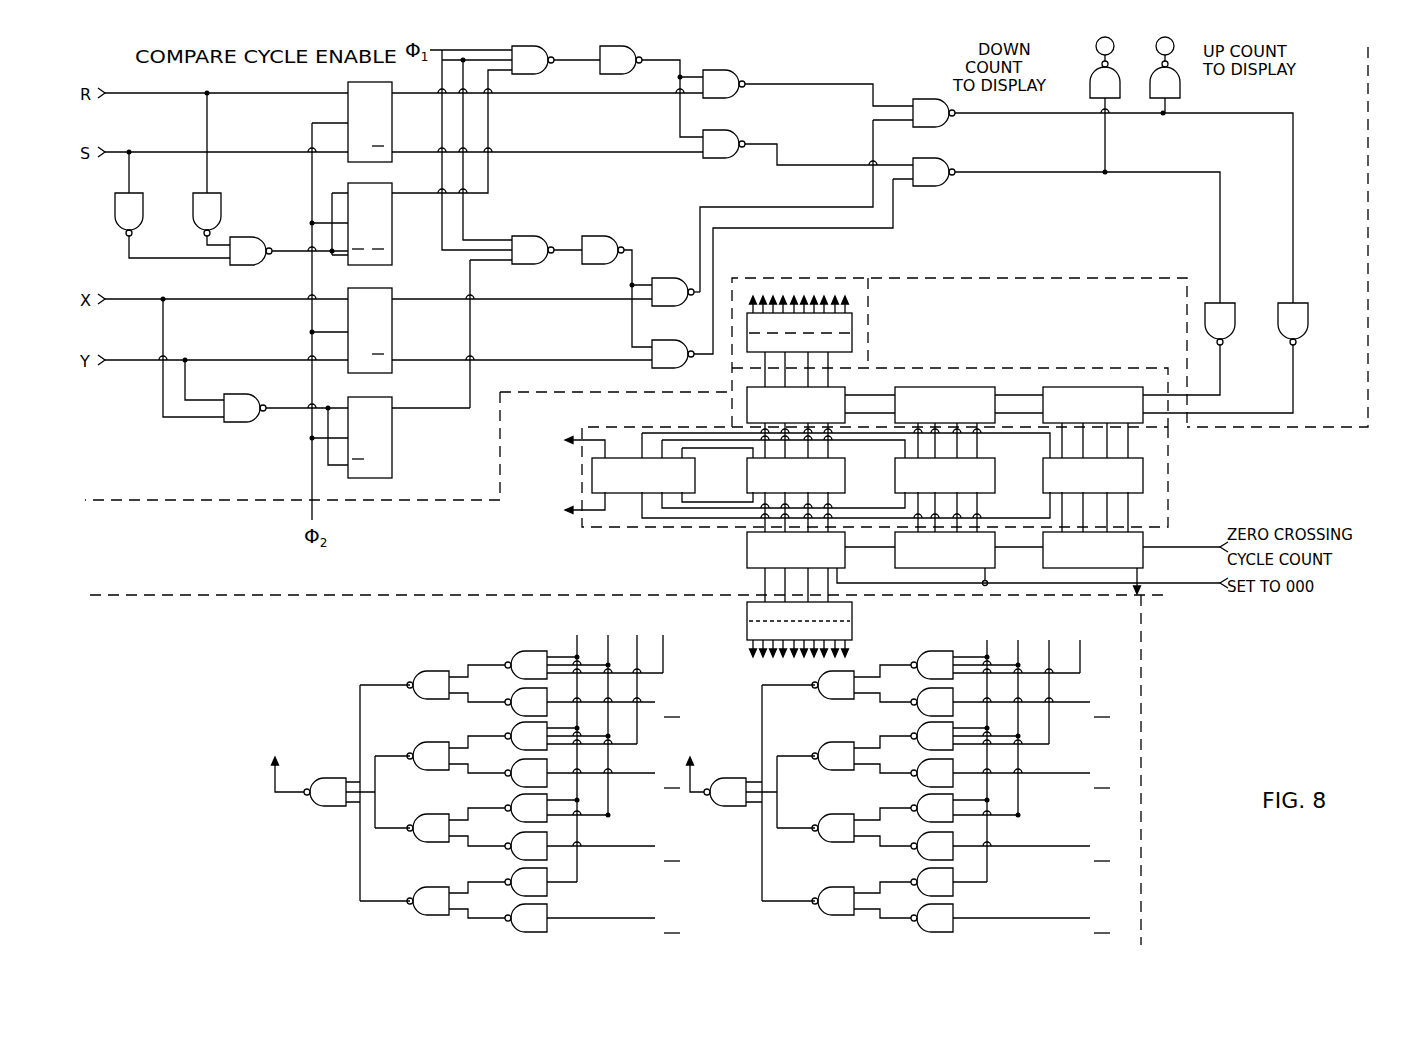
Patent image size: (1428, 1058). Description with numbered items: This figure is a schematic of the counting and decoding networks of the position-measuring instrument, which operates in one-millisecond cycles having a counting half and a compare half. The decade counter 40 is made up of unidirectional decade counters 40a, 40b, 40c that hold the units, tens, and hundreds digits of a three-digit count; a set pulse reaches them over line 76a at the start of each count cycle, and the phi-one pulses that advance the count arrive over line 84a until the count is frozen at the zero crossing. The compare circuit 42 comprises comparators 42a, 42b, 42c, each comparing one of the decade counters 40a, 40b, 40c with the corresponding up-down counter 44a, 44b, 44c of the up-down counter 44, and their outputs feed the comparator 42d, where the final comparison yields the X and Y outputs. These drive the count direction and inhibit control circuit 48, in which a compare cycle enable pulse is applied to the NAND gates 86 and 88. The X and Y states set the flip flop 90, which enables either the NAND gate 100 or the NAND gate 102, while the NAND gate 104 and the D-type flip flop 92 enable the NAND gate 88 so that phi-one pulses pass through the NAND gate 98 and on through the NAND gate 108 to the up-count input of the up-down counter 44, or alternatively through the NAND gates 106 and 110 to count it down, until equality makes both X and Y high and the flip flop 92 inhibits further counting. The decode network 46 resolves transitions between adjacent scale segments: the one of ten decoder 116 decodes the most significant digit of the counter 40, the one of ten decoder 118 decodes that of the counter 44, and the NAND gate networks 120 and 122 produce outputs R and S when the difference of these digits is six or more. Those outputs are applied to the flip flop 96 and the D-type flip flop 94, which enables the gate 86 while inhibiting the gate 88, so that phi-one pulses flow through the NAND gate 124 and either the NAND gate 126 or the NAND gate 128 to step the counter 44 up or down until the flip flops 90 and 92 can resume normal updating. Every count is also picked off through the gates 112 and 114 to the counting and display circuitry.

The decade counter 40 is at (983, 576).
The unidirectional decade counter 40a is at (1143, 557).
The unidirectional decade counter 40b is at (995, 555).
The unidirectional decade counter 40c is at (845, 555).
The compare circuit 42 is at (877, 477).
The comparator 42a is at (1143, 475).
The comparator 42b is at (995, 480).
The comparator 42c is at (845, 480).
The comparator 42d is at (695, 480).
The up-down counter 44 is at (950, 361).
The up-down counter 44a is at (1090, 387).
The up-down counter 44b is at (940, 387).
The up-down counter 44c is at (848, 381).
The decode network 46 is at (868, 360).
The count direction and inhibit control circuit 48 is at (1370, 192).
The line 76a is at (1207, 585).
The line 84a is at (1197, 546).
The NAND gate 86 is at (535, 72).
The NAND gate 88 is at (528, 238).
The flip flop 90 is at (392, 322).
The D-type flip flop 92 is at (392, 440).
The D-type flip flop 94 is at (392, 213).
The flip flop 96 is at (392, 120).
The NAND gate 98 is at (604, 238).
The NAND gate 100 is at (670, 278).
The NAND gate 102 is at (672, 342).
The NAND gate 104 is at (250, 422).
The NAND gate 106 is at (938, 170).
The NAND gate 108 is at (1300, 328).
The NAND gate 110 is at (1226, 328).
The gate 112 is at (1158, 72).
The gate 114 is at (1094, 72).
The one of ten decoder 116 is at (852, 620).
The one of ten decoder 118 is at (852, 328).
The NAND gate network 120 is at (798, 677).
The NAND gate network 122 is at (420, 662).
The NAND gate 124 is at (638, 52).
The NAND gate 126 is at (730, 72).
The NAND gate 128 is at (733, 132).